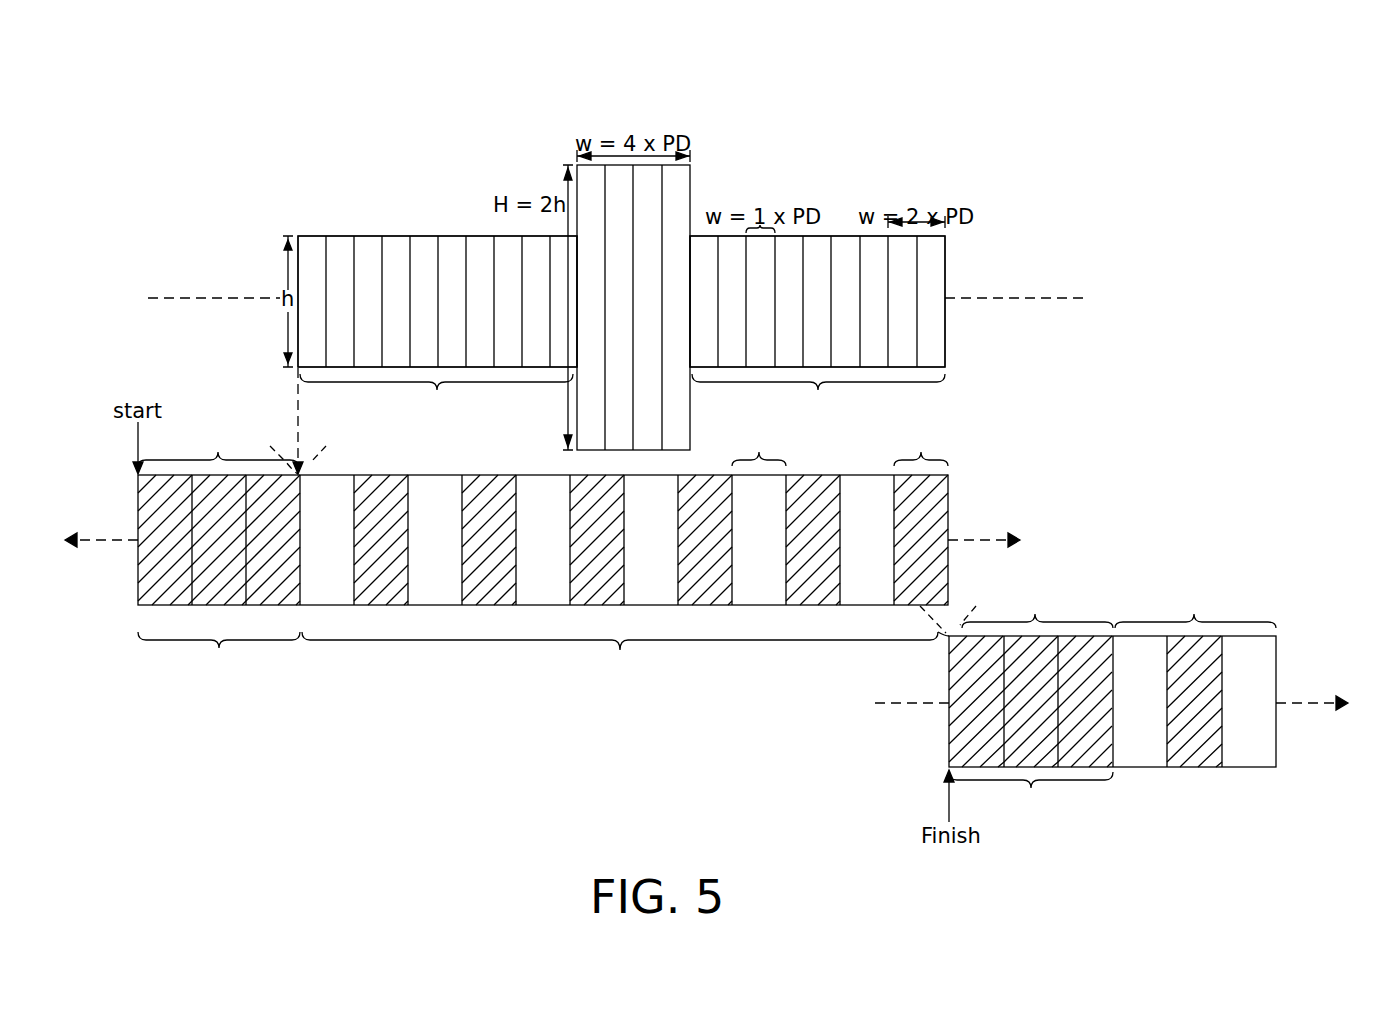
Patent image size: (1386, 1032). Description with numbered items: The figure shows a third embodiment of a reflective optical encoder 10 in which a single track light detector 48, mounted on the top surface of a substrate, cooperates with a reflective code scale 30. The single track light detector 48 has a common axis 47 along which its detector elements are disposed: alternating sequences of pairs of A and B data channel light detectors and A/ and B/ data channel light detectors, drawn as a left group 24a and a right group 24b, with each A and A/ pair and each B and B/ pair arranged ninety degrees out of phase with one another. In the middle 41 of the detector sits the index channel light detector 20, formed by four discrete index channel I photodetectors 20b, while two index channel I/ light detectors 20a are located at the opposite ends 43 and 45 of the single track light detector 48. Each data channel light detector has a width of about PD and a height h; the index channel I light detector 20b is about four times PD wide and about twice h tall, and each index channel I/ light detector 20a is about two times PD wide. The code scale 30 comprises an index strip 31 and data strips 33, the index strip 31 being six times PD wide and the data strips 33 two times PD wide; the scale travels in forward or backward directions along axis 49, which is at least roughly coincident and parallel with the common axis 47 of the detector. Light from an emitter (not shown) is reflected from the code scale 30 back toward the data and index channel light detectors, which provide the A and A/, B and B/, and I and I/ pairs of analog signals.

The reflective optical encoder 10 is at (182, 120).
The print head 20 is at (678, 190).
The index channel I/ light detectors 20a is at (342, 243).
The index channel I light detector 20b is at (562, 157).
The left portion of print head 24a is at (436, 396).
The right portion of print head 24b is at (818, 396).
The code scale 30 is at (1026, 455).
The index strip 31 is at (625, 624).
The data strips 33 is at (789, 600).
The middle of single track light detector 41 is at (630, 112).
The end of single track light detector 43 is at (272, 328).
The opposite end of single track light detector 45 is at (962, 258).
The common axis 47 is at (1048, 296).
The single track light detector 48 is at (188, 265).
The axis of code scale 49 is at (986, 538).